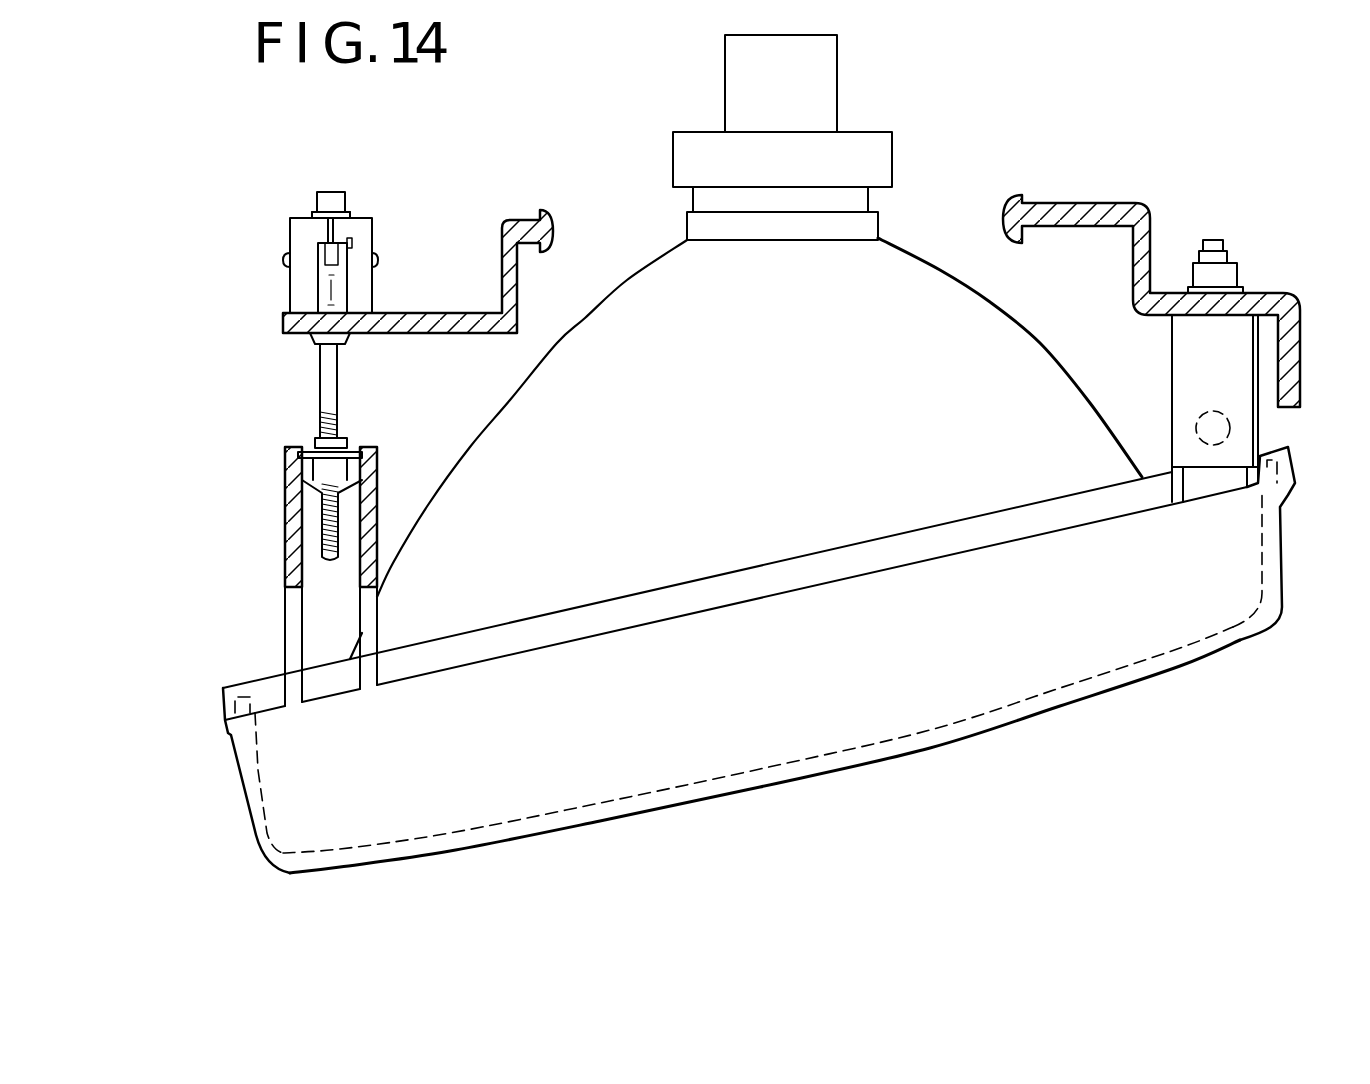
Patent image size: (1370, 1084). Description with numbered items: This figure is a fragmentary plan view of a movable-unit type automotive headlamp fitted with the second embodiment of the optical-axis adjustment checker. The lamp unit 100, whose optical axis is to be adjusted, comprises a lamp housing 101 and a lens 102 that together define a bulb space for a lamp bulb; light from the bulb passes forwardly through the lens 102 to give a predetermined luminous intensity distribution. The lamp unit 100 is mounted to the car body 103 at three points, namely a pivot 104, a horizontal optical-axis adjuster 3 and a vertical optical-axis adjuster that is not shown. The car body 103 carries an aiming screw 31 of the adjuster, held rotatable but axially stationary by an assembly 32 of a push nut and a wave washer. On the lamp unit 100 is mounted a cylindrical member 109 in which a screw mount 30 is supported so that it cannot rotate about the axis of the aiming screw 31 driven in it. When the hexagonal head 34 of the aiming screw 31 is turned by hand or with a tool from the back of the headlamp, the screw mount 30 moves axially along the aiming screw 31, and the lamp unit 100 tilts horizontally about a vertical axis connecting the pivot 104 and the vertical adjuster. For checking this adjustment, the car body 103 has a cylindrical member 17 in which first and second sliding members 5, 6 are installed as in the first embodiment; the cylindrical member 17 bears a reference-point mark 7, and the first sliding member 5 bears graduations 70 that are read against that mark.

The lamp unit 100 is at (845, 86).
The lamp housing 101 is at (615, 287).
The lens 102 is at (1058, 707).
The car body 103 is at (520, 218).
The pivot 104 is at (1260, 425).
The horizontal optical-axis adjuster 3 is at (298, 420).
The cylindrical member 17 is at (290, 237).
The hexagonal head 34 is at (325, 193).
The first sliding member 5 is at (313, 210).
The second sliding member 6 is at (331, 215).
The graduations 70 is at (330, 240).
The reference-point mark 7 is at (353, 241).
The assembly of a push nut and a wave washer 32 is at (313, 343).
The aiming screw 31 is at (318, 390).
The screw mount 30 is at (302, 497).
The cylindrical member 109 is at (283, 557).